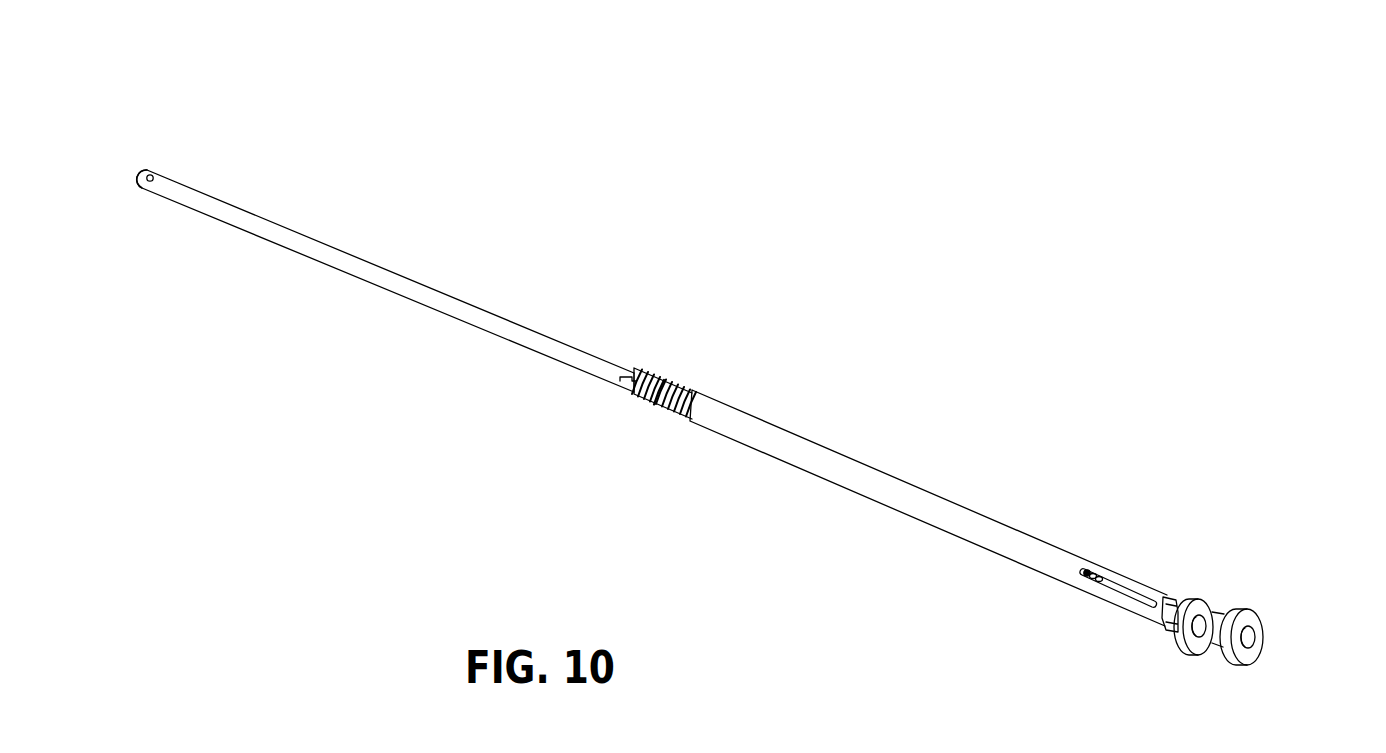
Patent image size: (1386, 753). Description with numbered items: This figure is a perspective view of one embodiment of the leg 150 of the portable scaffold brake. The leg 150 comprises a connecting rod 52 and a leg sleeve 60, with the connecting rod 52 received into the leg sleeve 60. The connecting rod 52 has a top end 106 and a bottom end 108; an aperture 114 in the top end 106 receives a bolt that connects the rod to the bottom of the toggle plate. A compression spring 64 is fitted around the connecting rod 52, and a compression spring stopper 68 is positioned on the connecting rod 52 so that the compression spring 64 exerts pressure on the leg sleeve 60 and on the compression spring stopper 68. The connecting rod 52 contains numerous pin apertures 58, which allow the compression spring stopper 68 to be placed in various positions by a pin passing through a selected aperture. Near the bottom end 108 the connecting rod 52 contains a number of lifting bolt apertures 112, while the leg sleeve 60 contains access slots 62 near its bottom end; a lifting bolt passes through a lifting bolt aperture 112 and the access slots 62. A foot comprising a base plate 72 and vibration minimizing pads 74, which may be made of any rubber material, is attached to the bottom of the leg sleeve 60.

The connecting rod 52 is at (372, 275).
The pin apertures 58 is at (622, 376).
The leg sleeve 60 is at (880, 485).
The access slots 62 is at (1118, 590).
The compression spring 64 is at (665, 405).
The compression spring stopper 68 is at (632, 392).
The base plate 72 is at (1160, 620).
The vibration minimizing pads 74 is at (1250, 613).
The top end 106 is at (143, 171).
The bottom end 108 is at (1092, 570).
The lifting bolt apertures 112 is at (1083, 573).
The aperture 114 is at (150, 181).
The leg 150 is at (697, 343).